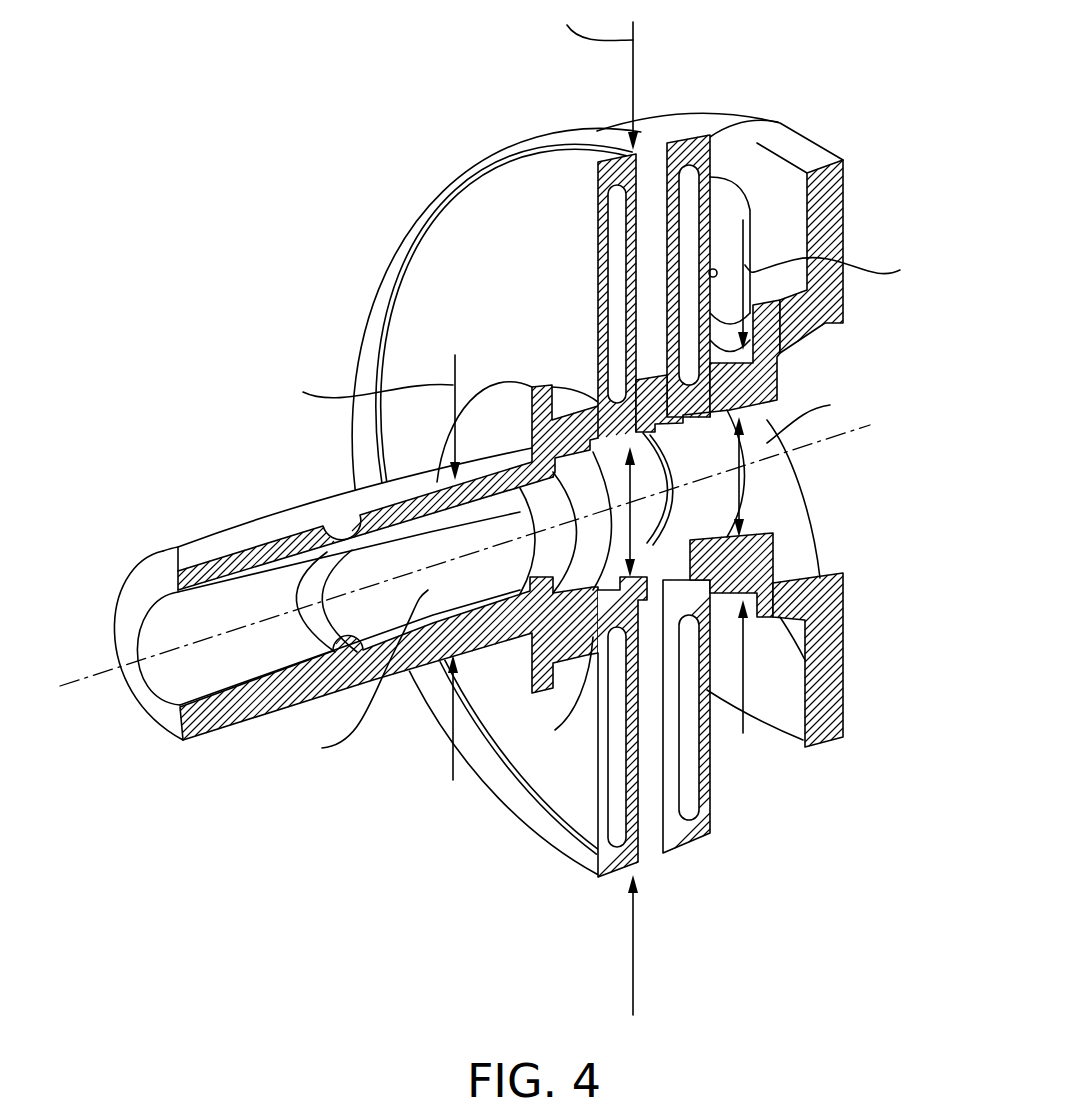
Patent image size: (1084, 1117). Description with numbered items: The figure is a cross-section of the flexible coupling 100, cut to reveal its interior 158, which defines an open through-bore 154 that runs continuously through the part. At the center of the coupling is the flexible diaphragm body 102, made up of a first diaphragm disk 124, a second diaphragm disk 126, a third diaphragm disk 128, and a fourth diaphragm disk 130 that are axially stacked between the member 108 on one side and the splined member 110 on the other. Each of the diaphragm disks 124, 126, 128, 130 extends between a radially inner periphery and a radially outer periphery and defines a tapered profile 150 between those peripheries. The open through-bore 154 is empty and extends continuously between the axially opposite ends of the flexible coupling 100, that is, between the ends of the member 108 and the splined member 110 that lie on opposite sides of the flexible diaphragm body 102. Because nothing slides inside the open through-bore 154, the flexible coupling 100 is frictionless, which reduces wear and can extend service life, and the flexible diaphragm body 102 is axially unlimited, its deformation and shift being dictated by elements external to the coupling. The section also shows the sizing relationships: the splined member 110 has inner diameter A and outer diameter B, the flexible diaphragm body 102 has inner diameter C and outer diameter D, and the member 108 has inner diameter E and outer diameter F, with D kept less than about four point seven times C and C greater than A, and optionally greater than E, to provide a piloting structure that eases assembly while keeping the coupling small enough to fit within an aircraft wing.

The flexible coupling 100 is at (501, 507).
The flexible diaphragm body 102 is at (661, 893).
The member 108 is at (833, 772).
The splined member 110 is at (383, 722).
The first diaphragm disk 124 is at (693, 133).
The second diaphragm disk 126 is at (670, 137).
The third diaphragm disk 128 is at (630, 153).
The fourth diaphragm disk 130 is at (597, 158).
The tapered profiles 150 is at (603, 283).
The open through-bore 154 is at (430, 550).
The interior 158 is at (757, 483).